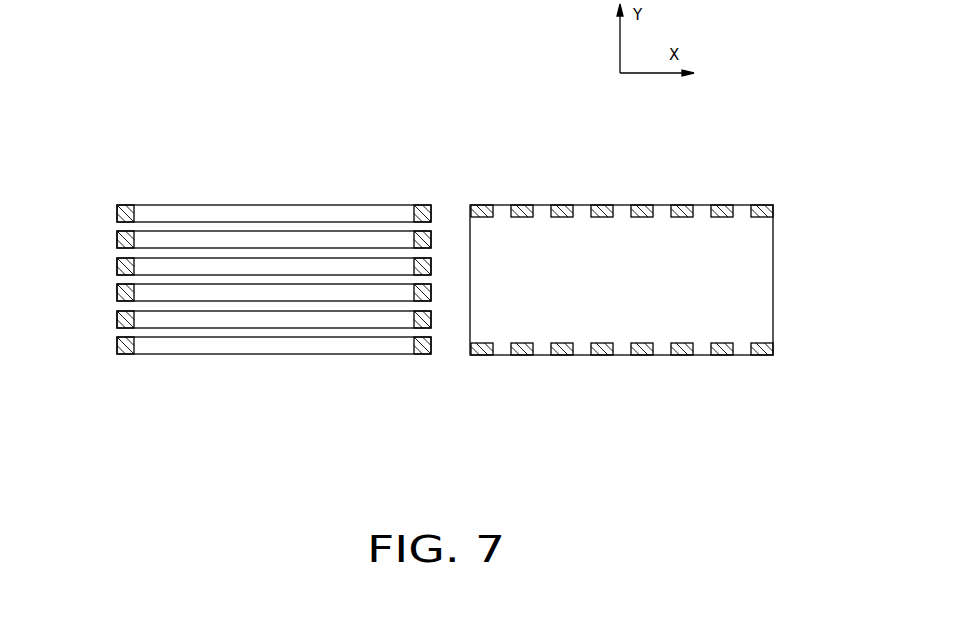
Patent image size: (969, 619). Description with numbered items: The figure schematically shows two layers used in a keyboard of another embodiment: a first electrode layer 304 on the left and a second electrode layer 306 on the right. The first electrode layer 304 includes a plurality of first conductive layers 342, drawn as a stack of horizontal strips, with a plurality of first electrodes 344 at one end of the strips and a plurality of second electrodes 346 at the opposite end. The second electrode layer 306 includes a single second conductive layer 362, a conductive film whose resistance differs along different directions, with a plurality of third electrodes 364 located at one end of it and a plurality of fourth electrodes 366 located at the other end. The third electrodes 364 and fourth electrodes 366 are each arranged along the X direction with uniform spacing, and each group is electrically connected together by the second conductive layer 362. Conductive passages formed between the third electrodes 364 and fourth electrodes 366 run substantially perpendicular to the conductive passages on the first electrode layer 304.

The first electrode layer 304 is at (262, 143).
The first conductive layer 342 is at (282, 205).
The first electrode 344 is at (121, 206).
The second electrode 346 is at (421, 206).
The second electrode layer 306 is at (623, 175).
The second conductive layer 362 is at (773, 290).
The third electrode 364 is at (706, 212).
The fourth electrode 366 is at (689, 356).